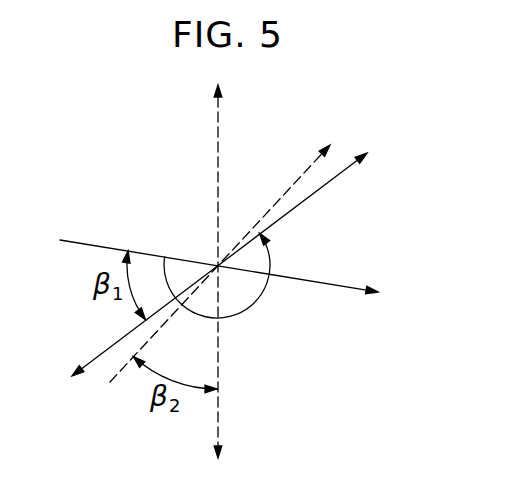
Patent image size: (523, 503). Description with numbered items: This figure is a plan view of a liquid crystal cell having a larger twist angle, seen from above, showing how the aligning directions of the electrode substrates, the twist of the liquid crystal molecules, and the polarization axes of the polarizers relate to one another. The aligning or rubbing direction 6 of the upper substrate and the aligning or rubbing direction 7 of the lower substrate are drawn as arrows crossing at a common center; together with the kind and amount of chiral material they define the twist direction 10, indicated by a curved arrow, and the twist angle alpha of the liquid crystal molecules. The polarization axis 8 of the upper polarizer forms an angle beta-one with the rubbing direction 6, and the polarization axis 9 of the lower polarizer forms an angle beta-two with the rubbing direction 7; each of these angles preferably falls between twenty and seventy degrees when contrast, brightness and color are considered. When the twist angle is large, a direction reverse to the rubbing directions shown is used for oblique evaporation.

The aligning or rubbing direction of the upper substrate 6 is at (328, 285).
The aligning or rubbing direction of the lower substrate 7 is at (287, 192).
The polarization axis of the upper polarizer 8 is at (308, 197).
The polarization axis of the lower polarizer 9 is at (218, 404).
The twist direction 10 is at (235, 318).